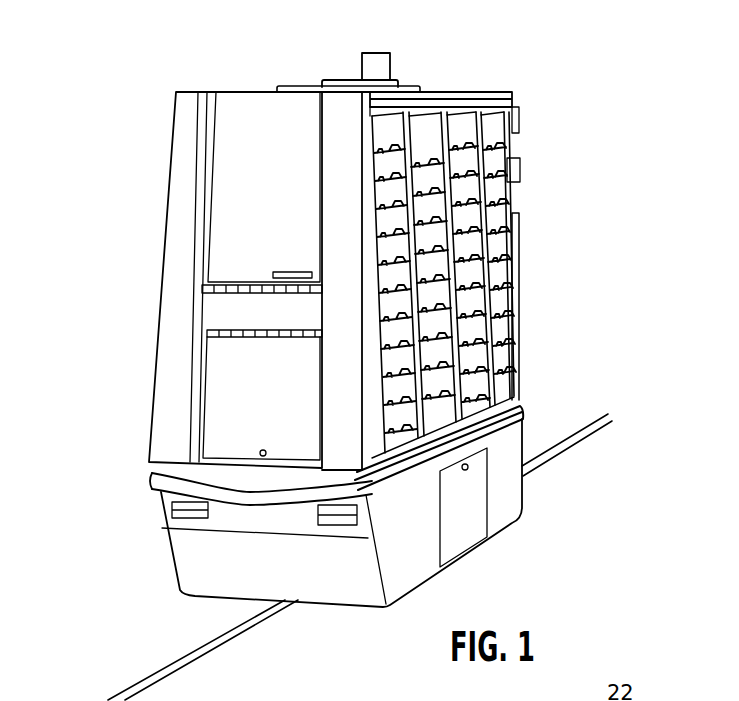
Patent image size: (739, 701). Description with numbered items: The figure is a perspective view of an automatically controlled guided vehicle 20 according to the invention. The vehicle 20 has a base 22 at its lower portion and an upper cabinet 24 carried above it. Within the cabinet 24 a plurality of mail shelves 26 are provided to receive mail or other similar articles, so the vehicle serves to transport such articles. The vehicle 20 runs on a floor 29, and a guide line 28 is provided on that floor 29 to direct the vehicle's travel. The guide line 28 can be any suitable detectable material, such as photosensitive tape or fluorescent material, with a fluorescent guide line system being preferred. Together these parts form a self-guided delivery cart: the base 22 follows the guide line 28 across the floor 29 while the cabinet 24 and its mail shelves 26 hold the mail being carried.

The automatically controlled guided vehicle 20 is at (503, 68).
The base 22 is at (512, 498).
The upper cabinet 24 is at (520, 218).
The mail shelves 26 is at (495, 253).
The guide line 28 is at (253, 628).
The floor 29 is at (561, 571).